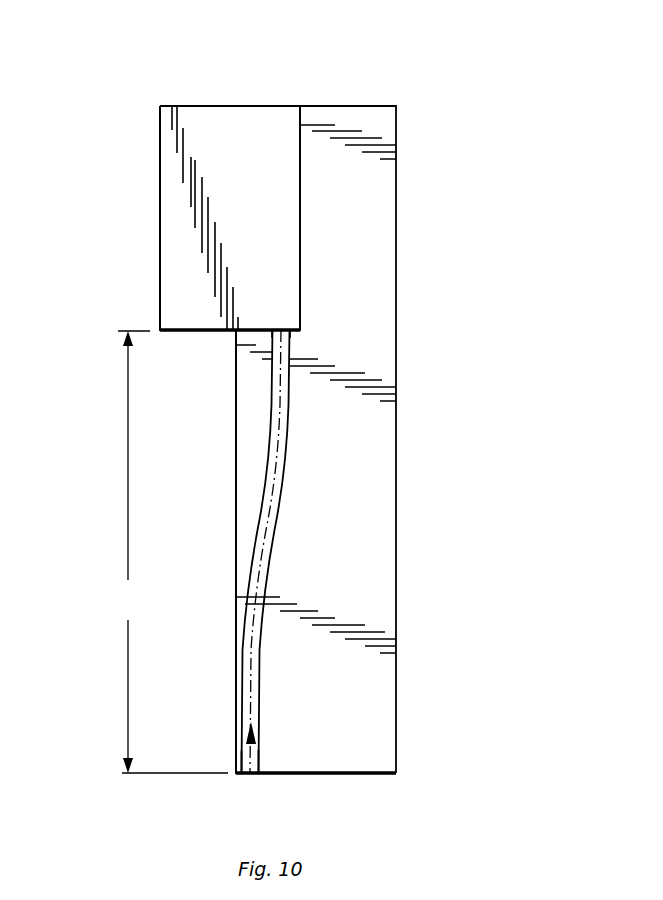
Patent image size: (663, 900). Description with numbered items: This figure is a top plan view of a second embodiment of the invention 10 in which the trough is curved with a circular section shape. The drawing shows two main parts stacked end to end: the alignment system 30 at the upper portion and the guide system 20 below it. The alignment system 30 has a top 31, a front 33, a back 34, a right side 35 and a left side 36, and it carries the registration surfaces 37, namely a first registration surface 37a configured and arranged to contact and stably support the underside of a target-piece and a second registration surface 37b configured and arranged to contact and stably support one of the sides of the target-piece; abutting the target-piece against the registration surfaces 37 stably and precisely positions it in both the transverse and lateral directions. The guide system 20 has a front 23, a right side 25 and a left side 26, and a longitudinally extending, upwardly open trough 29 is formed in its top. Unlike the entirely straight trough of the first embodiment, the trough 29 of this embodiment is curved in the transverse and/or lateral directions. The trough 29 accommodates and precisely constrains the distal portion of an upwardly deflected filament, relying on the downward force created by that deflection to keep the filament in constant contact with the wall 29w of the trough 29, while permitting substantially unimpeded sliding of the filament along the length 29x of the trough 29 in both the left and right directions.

The cable assembly 10 is at (458, 60).
The guide system 20 is at (66, 742).
The front 23 is at (236, 441).
The right side 25 is at (381, 776).
The left side 26 is at (261, 330).
The trough 29 is at (245, 776).
The wall of the trough 29w is at (280, 505).
The length of the trough 29x is at (170, 552).
The alignment system 30 is at (69, 108).
The top 31 is at (163, 136).
The front 33 is at (163, 200).
The back 34 is at (301, 243).
The right side 35 is at (188, 335).
The left side 36 is at (229, 105).
The registration surfaces 37 is at (300, 120).
The first registration surface 37a is at (245, 150).
The second registration surface 37b is at (300, 198).